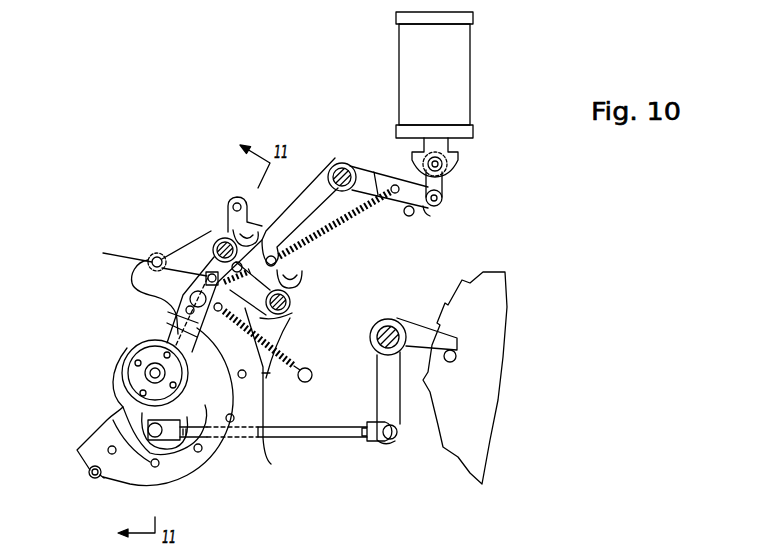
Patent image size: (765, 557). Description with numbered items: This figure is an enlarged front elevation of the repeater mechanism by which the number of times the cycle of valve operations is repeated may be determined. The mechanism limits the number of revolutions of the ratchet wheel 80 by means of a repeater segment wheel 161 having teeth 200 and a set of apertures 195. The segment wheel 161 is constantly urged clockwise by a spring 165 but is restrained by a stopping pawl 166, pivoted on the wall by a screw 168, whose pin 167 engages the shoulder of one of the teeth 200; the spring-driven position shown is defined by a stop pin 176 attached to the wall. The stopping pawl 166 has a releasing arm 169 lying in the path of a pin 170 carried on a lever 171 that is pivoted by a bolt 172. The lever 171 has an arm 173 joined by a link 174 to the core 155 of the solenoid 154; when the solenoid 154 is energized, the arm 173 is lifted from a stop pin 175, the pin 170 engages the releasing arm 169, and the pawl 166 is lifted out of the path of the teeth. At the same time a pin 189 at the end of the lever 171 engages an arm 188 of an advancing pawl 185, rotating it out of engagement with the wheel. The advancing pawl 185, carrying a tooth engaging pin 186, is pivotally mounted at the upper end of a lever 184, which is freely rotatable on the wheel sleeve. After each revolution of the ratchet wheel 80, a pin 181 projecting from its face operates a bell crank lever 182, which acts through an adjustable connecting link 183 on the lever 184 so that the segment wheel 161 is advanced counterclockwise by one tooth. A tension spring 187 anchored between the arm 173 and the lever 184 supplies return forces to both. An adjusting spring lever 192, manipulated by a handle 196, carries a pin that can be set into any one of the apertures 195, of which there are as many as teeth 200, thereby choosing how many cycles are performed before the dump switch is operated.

The solenoid 154 is at (471, 77).
The core 155 is at (450, 150).
The link 174 is at (443, 191).
The arm 173 is at (426, 211).
The stop pin 175 is at (406, 216).
The bolt 172 is at (354, 167).
The lever 171 is at (329, 170).
The pin 170 is at (300, 211).
The tension spring 187 is at (318, 240).
The lever 184 is at (224, 234).
The pin 189 is at (236, 202).
The arm 188 is at (230, 231).
The pin 167 is at (213, 255).
The releasing arm 169 is at (304, 282).
The screw 168 is at (291, 304).
The stopping pawl 166 is at (265, 316).
The spring 165 is at (286, 352).
The tooth engaging pin 186 is at (153, 258).
The advancing pawl 185 is at (183, 254).
The handle 196 is at (178, 308).
The adjusting spring lever 192 is at (180, 328).
The repeater segment wheel 161 is at (190, 472).
The apertures 195 is at (110, 445).
The stop pin 176 is at (89, 476).
The teeth 200 is at (268, 376).
The connecting link 183 is at (298, 439).
The bell crank lever 182 is at (403, 322).
The pin 181 is at (450, 363).
The ratchet wheel 80 is at (483, 273).